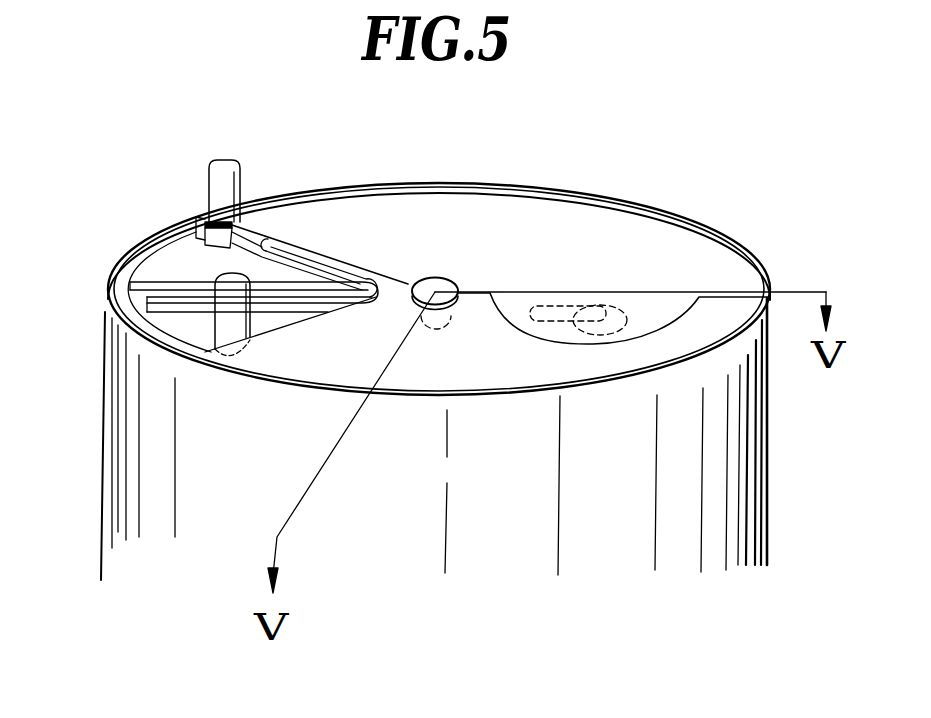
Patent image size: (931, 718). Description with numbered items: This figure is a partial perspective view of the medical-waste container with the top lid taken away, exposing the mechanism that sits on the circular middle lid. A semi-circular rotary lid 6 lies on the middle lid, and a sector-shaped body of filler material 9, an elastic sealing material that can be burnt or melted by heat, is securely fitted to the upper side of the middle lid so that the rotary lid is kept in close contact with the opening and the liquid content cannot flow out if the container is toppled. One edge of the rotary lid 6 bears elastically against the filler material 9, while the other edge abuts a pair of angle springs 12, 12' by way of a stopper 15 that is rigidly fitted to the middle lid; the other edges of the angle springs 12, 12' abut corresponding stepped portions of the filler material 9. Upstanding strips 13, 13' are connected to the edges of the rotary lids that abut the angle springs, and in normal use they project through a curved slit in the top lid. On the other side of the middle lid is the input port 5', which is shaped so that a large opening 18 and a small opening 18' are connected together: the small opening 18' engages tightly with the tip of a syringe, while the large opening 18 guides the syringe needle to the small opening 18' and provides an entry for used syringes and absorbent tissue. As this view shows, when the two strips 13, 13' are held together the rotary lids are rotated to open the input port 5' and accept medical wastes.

The semi-circular rotary lid 6 is at (470, 215).
The filler material 9 is at (420, 373).
The stopper 15 is at (155, 240).
The angle spring 12 is at (320, 256).
The angle spring 12' is at (254, 351).
The strip 13 is at (235, 171).
The strip 13' is at (226, 356).
The input port 5' is at (614, 280).
The large opening 18 is at (621, 294).
The small opening 18' is at (563, 287).